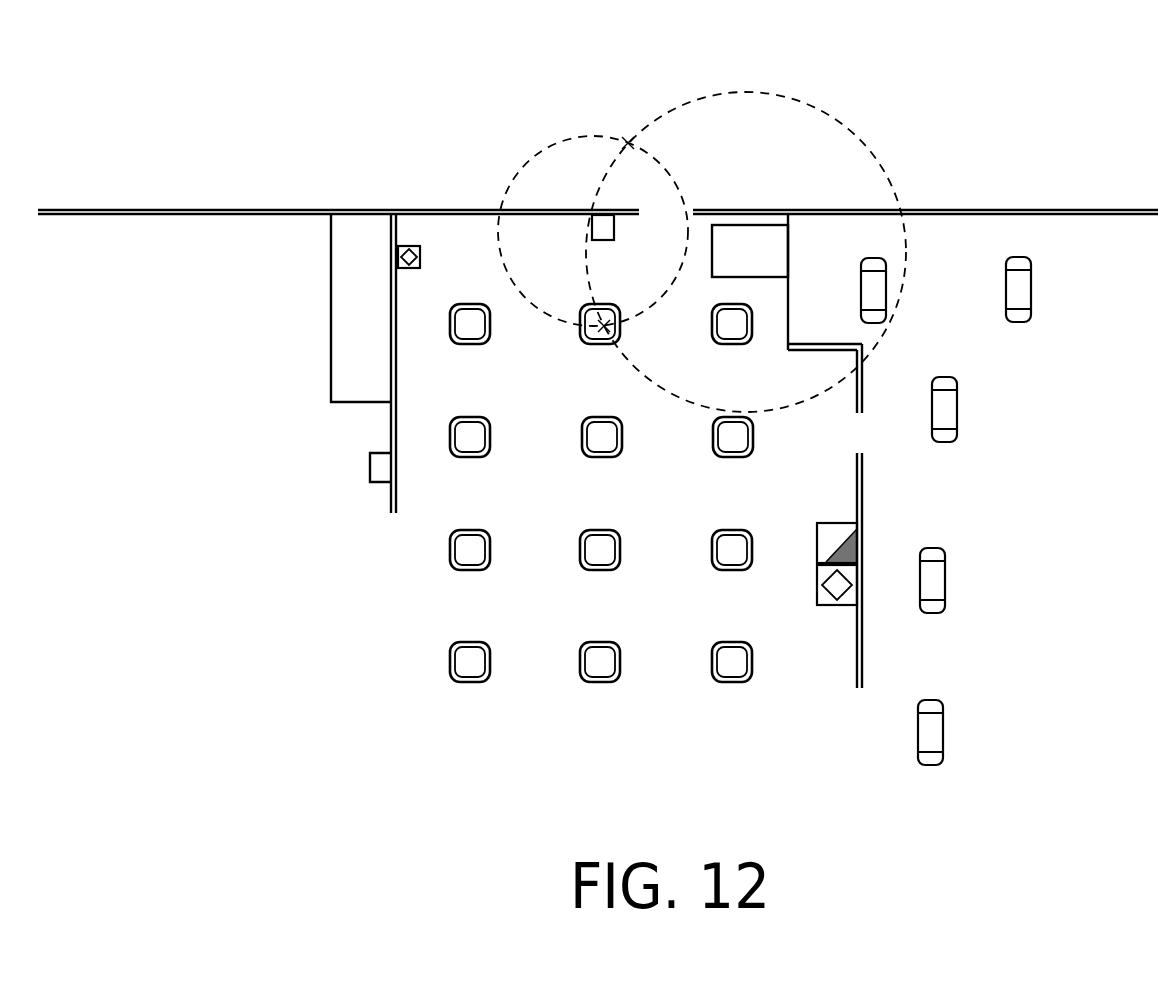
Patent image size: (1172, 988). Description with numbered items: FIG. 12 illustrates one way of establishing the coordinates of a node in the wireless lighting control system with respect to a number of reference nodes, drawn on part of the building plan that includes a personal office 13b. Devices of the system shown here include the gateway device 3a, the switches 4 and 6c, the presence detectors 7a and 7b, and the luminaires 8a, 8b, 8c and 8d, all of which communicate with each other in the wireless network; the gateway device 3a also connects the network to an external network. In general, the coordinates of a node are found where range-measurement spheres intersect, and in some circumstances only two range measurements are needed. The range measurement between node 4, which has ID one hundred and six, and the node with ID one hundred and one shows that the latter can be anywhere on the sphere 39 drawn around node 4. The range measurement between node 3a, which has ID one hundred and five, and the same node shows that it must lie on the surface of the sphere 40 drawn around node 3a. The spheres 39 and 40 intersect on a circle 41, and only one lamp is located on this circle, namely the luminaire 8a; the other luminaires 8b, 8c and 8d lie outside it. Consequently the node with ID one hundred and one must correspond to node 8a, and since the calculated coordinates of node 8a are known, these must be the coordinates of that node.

The sphere 39 is at (545, 150).
The sphere 40 is at (742, 92).
The circle 41 is at (628, 142).
The switch 4 is at (603, 228).
The gateway device 3a is at (750, 251).
The presence detector 7a is at (420, 256).
The luminaire 8a is at (612, 330).
The luminaire 8b is at (478, 437).
The luminaire 8c is at (610, 437).
The luminaire 8d is at (741, 437).
The switch 6c is at (836, 552).
The presence detector 7b is at (835, 605).
The personal office 13b is at (1019, 671).